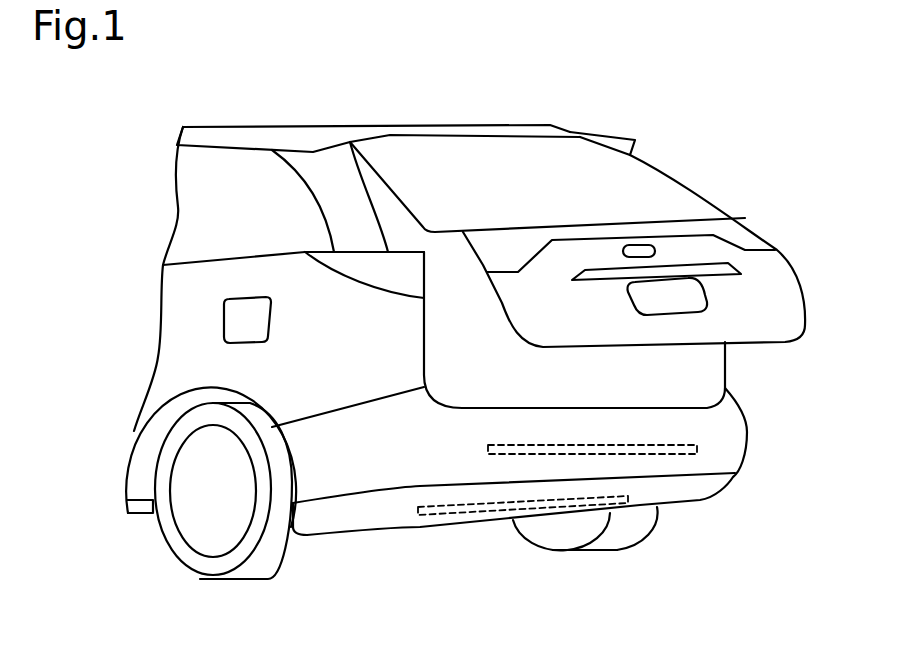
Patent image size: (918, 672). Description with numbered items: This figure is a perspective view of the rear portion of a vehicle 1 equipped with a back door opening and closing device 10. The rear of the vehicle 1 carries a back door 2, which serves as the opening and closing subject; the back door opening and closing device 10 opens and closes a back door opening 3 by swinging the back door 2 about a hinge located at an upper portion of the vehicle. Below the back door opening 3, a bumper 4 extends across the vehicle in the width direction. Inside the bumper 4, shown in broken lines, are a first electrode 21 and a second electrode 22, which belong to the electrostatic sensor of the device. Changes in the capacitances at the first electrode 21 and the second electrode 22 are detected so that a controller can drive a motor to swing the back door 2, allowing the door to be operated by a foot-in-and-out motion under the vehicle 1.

The vehicle 1 is at (307, 134).
The back door opening and closing device 10 is at (721, 150).
The back door 2 is at (772, 268).
The back door opening 3 is at (424, 340).
The bumper 4 is at (733, 427).
The first electrode 21 is at (677, 454).
The second electrode 22 is at (462, 513).